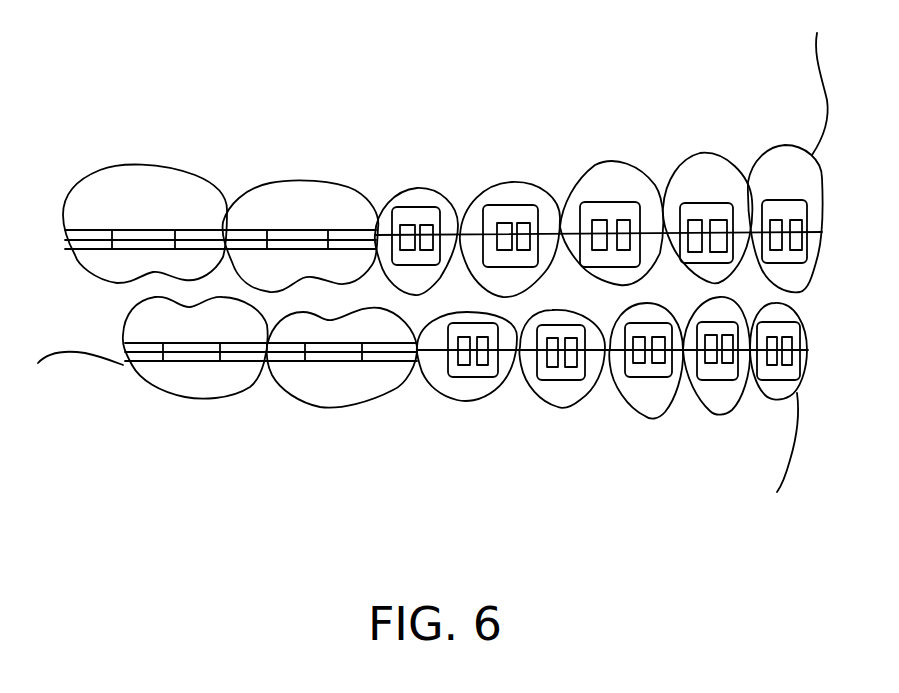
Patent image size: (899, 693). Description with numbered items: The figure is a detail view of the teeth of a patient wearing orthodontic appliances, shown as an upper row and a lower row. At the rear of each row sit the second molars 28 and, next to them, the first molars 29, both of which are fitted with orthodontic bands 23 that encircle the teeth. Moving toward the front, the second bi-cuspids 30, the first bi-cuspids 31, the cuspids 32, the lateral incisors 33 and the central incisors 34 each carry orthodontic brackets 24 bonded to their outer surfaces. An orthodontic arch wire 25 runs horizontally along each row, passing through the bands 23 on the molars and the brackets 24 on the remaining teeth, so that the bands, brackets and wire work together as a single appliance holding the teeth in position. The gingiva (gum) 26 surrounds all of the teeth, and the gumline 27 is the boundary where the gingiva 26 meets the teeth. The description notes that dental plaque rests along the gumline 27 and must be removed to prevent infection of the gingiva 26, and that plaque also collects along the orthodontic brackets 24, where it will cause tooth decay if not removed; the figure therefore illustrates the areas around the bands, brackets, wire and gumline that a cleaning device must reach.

The orthodontic bands 23 is at (342, 357).
The orthodontic brackets 24 is at (473, 368).
The orthodontic arch wire 25 is at (600, 352).
The gingiva (gum) 26 is at (768, 422).
The gumline 27 is at (243, 393).
The second molars 28 is at (95, 193).
The first molars 29 is at (295, 203).
The second bi-cuspids 30 is at (405, 197).
The first bi-cuspids 31 is at (508, 192).
The cuspids 32 is at (598, 182).
The lateral incisors 33 is at (697, 173).
The central incisors 34 is at (783, 167).